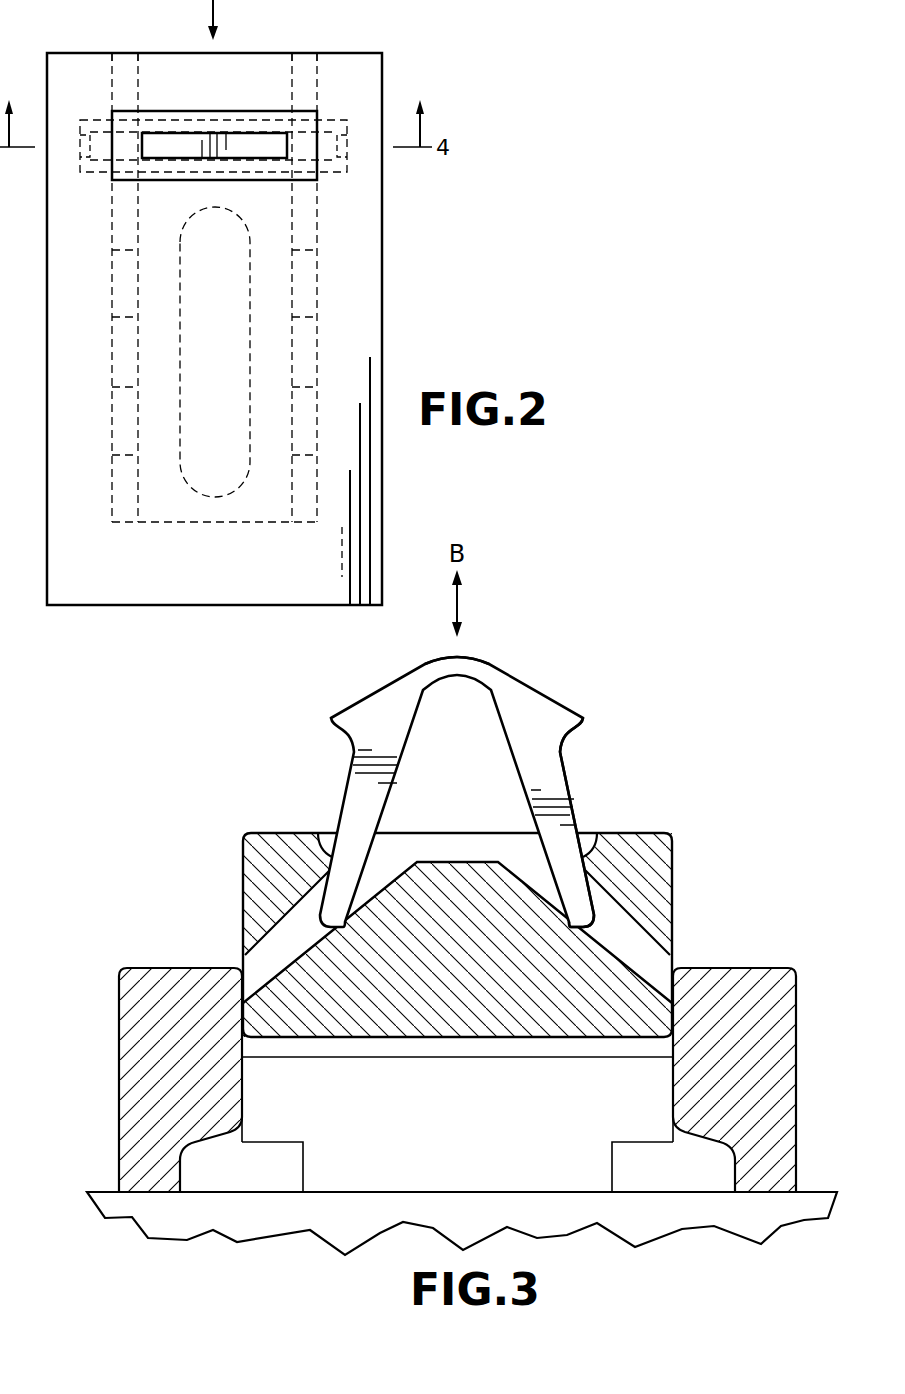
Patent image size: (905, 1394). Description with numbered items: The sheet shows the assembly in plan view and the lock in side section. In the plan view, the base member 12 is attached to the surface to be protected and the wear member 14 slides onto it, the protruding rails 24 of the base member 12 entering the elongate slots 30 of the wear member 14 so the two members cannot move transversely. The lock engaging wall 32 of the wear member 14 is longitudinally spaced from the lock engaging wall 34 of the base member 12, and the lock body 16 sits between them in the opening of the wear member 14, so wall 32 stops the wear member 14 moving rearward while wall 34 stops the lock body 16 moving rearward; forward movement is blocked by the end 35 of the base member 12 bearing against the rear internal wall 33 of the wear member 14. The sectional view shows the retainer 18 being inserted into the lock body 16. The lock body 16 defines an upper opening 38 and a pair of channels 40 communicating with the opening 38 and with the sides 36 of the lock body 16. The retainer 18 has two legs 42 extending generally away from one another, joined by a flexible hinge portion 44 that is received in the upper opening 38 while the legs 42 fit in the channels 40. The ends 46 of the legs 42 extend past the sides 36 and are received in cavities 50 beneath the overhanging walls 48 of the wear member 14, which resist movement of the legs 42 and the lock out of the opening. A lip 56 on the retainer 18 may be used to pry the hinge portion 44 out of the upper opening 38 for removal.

In FIG. 2, the base member 12 is at (123, 357).
In FIG. 3, the base member 12 is at (350, 1163).
In FIG. 2, the wear member 14 is at (353, 65).
In FIG. 3, the wear member 14 is at (130, 1016).
In FIG. 2, the lock body 16 is at (205, 123).
In FIG. 3, the lock body 16 is at (663, 852).
In FIG. 2, the retainer 18 is at (170, 143).
In FIG. 3, the retainer 18 is at (530, 698).
In FIG. 2, the protruding rails 24 is at (307, 352).
In FIG. 2, the elongate slots 30 is at (127, 65).
In FIG. 2, the lock engaging wall of the wear member 32 is at (237, 118).
In FIG. 2, the rear internal wall of the wear member 33 is at (225, 518).
In FIG. 2, the lock engaging wall of the base member 34 is at (192, 178).
In FIG. 3, the lock engaging wall of the base member 34 is at (443, 1127).
In FIG. 2, the end of the base member 35 is at (187, 527).
In FIG. 3, the sides of the lock body 36 is at (240, 875).
In FIG. 3, the upper opening 38 is at (462, 837).
In FIG. 3, the channels 40 is at (267, 955).
In FIG. 3, the legs 42 is at (557, 782).
In FIG. 3, the flexible hinge portion 44 is at (468, 665).
In FIG. 2, the ends of the legs 46 is at (80, 152).
In FIG. 3, the ends of the legs 46 is at (573, 903).
In FIG. 3, the overhanging walls 48 is at (213, 1133).
In FIG. 2, the cavities 50 is at (80, 133).
In FIG. 3, the cavities 50 is at (210, 1180).
In FIG. 3, the lip 56 is at (582, 723).